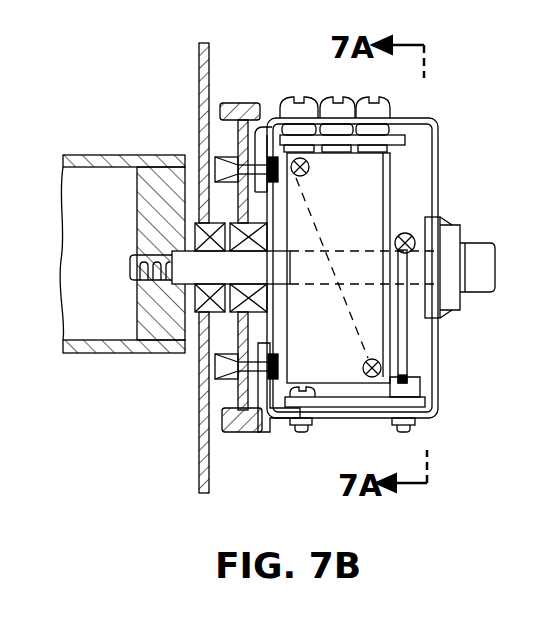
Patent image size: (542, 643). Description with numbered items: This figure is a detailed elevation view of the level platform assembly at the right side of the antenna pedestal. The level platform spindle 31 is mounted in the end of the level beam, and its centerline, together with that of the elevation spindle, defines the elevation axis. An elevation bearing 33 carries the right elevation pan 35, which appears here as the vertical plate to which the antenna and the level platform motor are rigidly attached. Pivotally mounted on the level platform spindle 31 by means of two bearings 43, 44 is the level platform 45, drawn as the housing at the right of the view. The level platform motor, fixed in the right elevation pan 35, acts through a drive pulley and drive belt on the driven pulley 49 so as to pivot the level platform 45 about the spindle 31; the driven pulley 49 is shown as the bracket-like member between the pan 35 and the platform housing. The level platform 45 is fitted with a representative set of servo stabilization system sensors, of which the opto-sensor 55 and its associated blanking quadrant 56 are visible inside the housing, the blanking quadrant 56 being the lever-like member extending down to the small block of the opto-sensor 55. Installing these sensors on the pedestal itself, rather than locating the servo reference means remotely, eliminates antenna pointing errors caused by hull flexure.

The level platform spindle 31 is at (481, 257).
The elevation bearing 33 is at (193, 300).
The right elevation pan 35 is at (199, 74).
The bearing 43 is at (213, 320).
The bearing 44 is at (456, 225).
The level platform 45 is at (440, 116).
The driven pulley 49 is at (244, 112).
The opto-sensor 55 is at (420, 383).
The blanking quadrant 56 is at (407, 340).